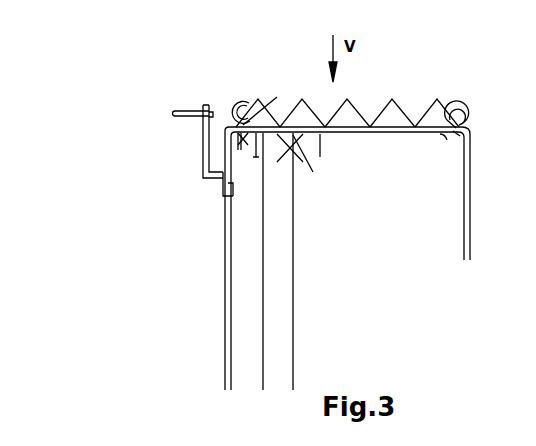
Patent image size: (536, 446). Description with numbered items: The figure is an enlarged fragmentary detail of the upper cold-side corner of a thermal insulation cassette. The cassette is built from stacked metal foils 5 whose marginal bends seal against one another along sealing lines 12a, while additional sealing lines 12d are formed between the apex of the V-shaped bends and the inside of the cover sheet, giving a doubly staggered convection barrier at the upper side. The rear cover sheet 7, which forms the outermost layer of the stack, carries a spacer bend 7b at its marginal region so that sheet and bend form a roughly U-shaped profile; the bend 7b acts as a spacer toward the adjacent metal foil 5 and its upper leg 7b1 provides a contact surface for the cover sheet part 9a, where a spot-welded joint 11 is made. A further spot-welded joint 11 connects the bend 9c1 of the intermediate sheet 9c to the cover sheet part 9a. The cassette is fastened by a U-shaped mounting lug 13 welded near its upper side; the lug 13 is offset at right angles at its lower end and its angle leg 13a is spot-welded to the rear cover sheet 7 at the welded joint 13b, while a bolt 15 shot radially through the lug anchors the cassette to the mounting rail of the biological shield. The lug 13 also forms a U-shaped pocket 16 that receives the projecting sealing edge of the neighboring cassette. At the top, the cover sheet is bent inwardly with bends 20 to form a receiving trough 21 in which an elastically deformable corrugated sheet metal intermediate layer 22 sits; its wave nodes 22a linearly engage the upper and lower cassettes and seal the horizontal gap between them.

The metal foil 5 is at (263, 351).
The rear cover sheet 7 is at (225, 268).
The spacer bend 7b is at (240, 143).
The upper leg of spacer bend 7b1 is at (271, 97).
The cover sheet part 9a is at (402, 132).
The intermediate sheet 9c is at (470, 216).
The bend of intermediate sheet 9c1 is at (440, 134).
The spot-welded joint 11 is at (266, 148).
The sealing line 12a is at (297, 158).
The additional sealing line 12d is at (311, 163).
The mounting lug 13 is at (203, 158).
The angle leg 13a is at (219, 186).
The welded joint 13b is at (232, 203).
The bolt 15 is at (185, 110).
The U-shaped pocket 16 is at (217, 130).
The bend 20 is at (240, 100).
The receiving trough 21 is at (350, 112).
The corrugated sheet metal intermediate layer 22 is at (431, 104).
The wave node 22a is at (392, 101).